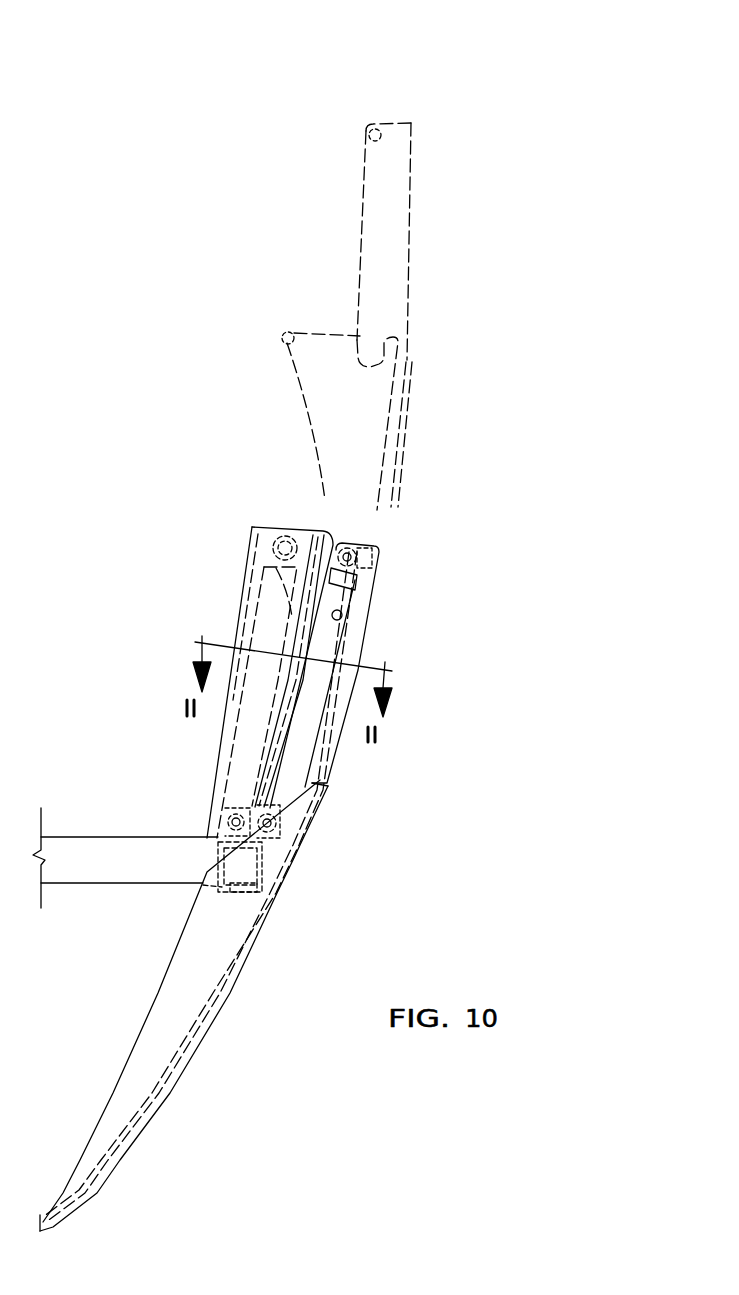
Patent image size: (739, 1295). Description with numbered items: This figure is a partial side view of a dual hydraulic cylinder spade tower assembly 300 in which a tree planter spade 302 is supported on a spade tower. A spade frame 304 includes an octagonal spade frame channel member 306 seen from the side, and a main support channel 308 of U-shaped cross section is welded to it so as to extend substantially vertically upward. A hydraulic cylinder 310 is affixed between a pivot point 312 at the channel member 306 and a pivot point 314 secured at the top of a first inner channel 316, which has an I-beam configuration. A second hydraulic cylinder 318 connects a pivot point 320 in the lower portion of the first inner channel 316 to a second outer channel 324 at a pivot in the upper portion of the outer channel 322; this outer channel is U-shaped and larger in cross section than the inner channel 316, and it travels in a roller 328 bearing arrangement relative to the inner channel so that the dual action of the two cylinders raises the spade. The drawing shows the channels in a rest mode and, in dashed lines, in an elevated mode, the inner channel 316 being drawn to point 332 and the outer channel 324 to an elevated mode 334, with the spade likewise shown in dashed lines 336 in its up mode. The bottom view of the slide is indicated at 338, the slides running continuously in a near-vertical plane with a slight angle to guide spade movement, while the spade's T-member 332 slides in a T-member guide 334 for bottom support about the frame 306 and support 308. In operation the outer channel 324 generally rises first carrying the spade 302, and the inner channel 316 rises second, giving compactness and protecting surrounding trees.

The dual hydraulic cylinder spade tower assembly 300 is at (536, 69).
The tree planter spade 302 is at (260, 943).
The spade frame 304 is at (145, 885).
The spade frame channel member 306 is at (263, 870).
The main support channel 308 is at (225, 730).
The hydraulic cylinder 310 is at (232, 765).
The pivot point 312 is at (228, 817).
The pivot point 314 is at (292, 334).
The first inner channel 316 is at (302, 398).
The second hydraulic cylinder 318 is at (353, 597).
The pivot point 320 is at (275, 828).
The upper portion of the outer channel 322 is at (380, 128).
The second outer channel 324 is at (412, 210).
The roller 328 is at (360, 558).
The T-member 332 is at (288, 332).
The T-member guide 334 is at (403, 122).
The slide 336 is at (412, 392).
The slide 338 is at (132, 817).